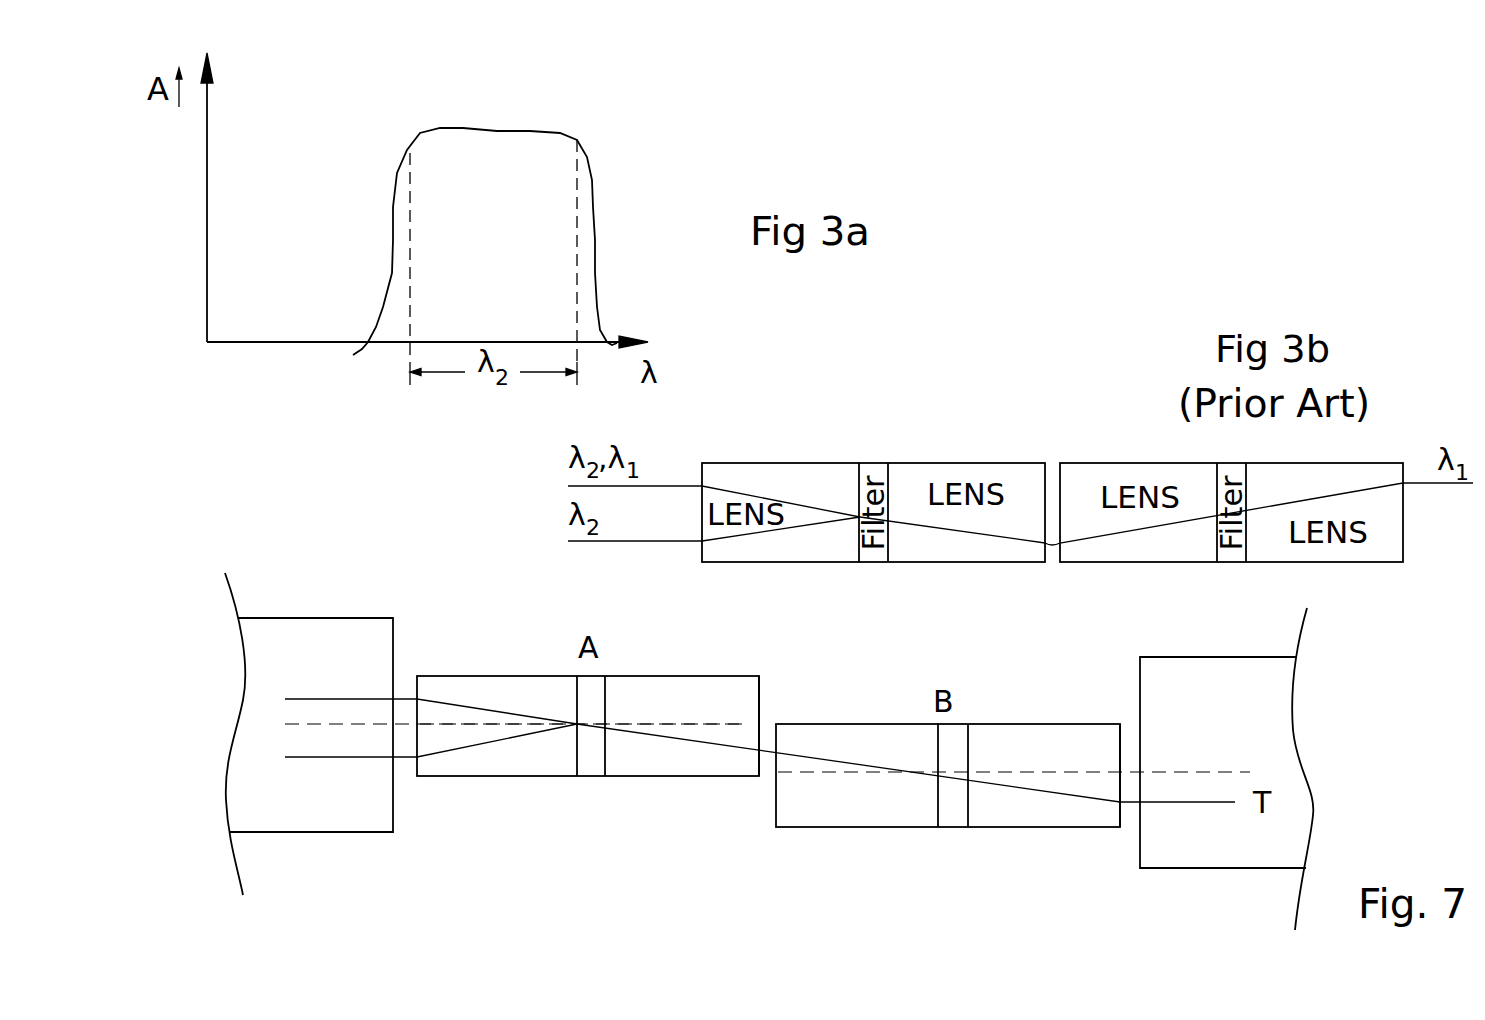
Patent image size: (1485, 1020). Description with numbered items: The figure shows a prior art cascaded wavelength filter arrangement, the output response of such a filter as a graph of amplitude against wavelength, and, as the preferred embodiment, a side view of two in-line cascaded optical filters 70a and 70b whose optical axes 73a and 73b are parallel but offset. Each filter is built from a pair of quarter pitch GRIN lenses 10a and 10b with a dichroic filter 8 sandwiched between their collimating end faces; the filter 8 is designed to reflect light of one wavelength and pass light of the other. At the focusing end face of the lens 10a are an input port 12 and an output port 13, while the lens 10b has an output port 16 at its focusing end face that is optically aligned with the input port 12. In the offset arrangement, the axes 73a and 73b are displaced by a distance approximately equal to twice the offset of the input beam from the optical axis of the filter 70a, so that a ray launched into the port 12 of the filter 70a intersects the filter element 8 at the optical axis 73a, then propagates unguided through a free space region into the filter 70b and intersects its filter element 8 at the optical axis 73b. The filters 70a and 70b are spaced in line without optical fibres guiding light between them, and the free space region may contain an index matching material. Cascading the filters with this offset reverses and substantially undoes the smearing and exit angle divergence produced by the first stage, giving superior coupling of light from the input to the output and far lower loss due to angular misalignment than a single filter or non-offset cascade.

The dichroic filter 8 is at (583, 777).
The quarter pitch GRIN lens 10a is at (435, 777).
The quarter pitch GRIN lens 10b is at (725, 776).
The input port 12 is at (393, 699).
The output port 13 is at (393, 757).
The output port 16 is at (760, 750).
The in-line cascaded optical filter 70a is at (732, 676).
The optical axis 73a is at (745, 724).
The in-line cascaded optical filter 70b is at (1093, 724).
The optical axis 73b is at (1190, 772).